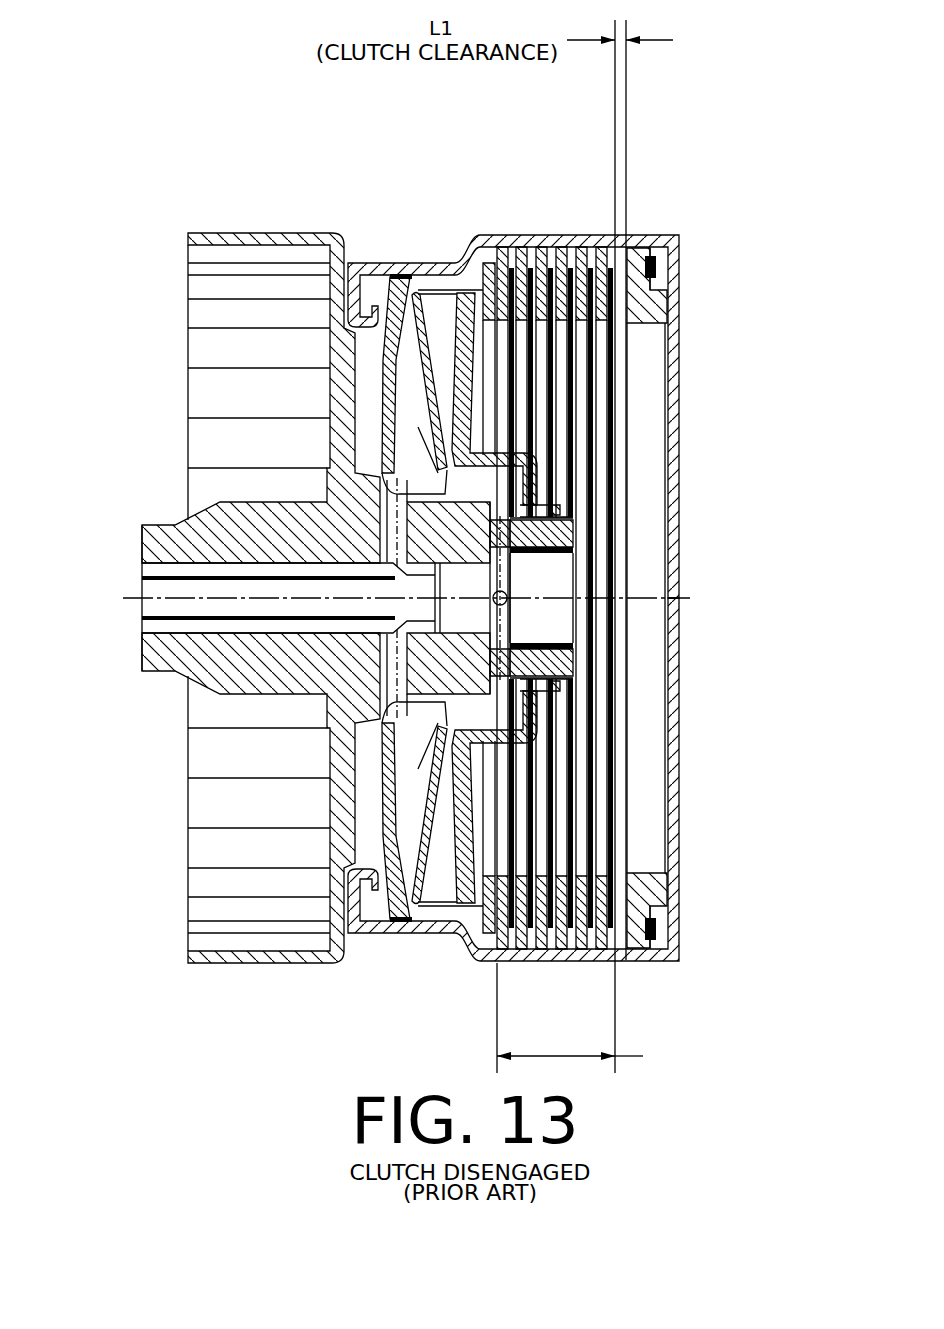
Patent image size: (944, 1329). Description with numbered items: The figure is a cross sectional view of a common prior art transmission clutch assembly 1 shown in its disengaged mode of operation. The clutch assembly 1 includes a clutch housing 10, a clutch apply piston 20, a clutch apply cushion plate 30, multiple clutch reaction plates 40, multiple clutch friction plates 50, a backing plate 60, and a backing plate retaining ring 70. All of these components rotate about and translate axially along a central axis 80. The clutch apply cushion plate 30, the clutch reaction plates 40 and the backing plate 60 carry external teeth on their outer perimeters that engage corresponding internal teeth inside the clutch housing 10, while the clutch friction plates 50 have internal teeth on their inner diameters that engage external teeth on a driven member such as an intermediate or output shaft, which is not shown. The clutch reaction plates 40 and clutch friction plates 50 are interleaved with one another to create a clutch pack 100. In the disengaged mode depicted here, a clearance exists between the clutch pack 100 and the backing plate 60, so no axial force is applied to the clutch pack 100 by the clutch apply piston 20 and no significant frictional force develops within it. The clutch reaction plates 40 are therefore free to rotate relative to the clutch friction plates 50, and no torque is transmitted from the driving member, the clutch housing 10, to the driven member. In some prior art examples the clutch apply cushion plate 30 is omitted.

The clutch assembly 1 is at (733, 538).
The clutch housing 10 is at (386, 254).
The clutch apply piston 20 is at (428, 266).
The clutch apply cushion plate 30 is at (484, 254).
The clutch reaction plates 40 is at (537, 245).
The clutch friction plates 50 is at (589, 250).
The backing plate 60 is at (634, 247).
The backing plate retaining ring 70 is at (658, 248).
The central axis 80 is at (132, 597).
The clutch pack 100 is at (713, 1080).